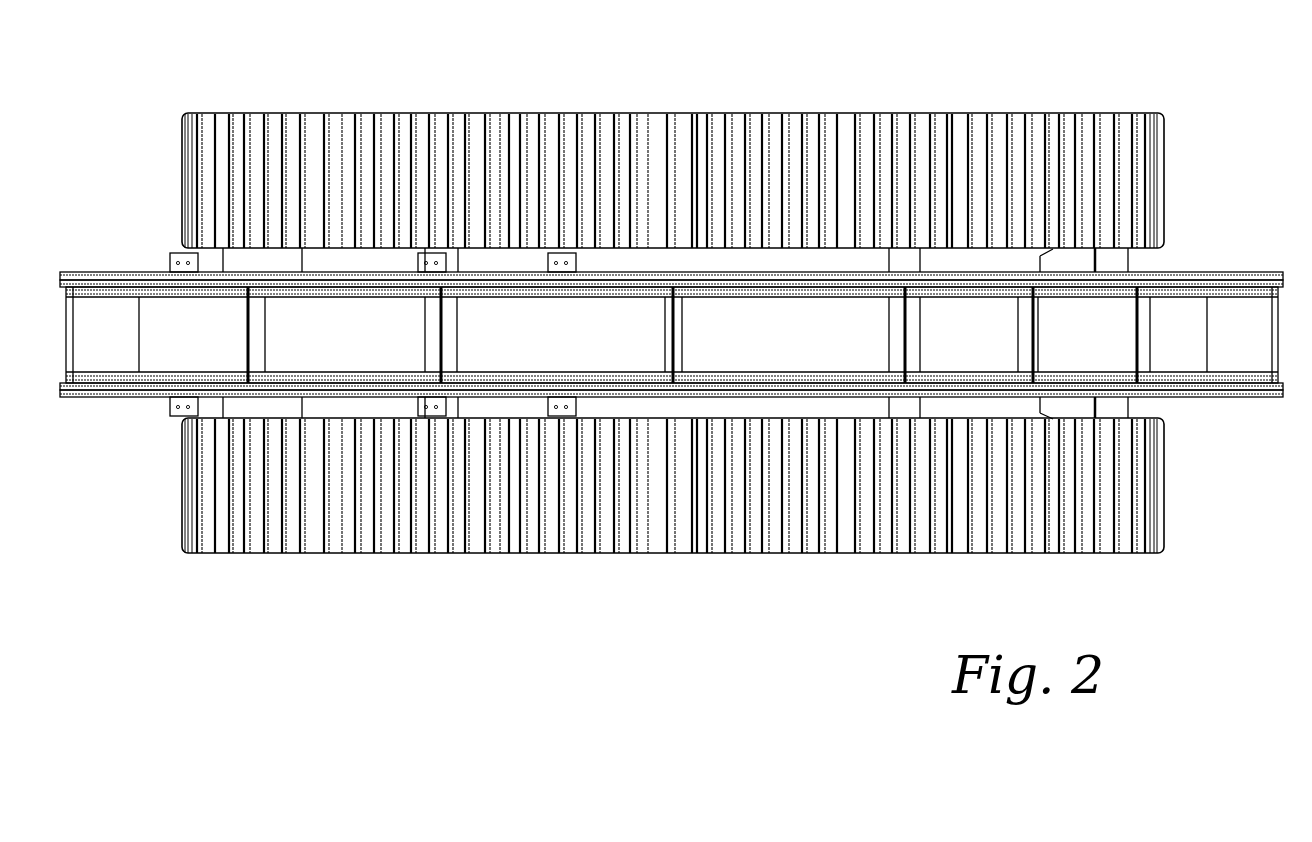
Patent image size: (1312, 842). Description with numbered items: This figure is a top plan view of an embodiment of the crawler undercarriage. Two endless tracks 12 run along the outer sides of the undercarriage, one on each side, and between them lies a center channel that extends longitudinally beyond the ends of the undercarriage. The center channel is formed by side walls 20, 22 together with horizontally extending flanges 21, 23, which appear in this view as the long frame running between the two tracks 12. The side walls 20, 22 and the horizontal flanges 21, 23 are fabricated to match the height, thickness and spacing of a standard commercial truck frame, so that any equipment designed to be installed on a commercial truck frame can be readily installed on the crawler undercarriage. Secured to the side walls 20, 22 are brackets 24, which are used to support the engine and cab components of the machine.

The endless track 12 is at (1163, 138).
The side wall 20 is at (1185, 271).
The horizontally extending flange 21 is at (1253, 283).
The side wall 22 is at (1262, 396).
The horizontally extending flange 23 is at (1215, 385).
The bracket 24 is at (172, 253).